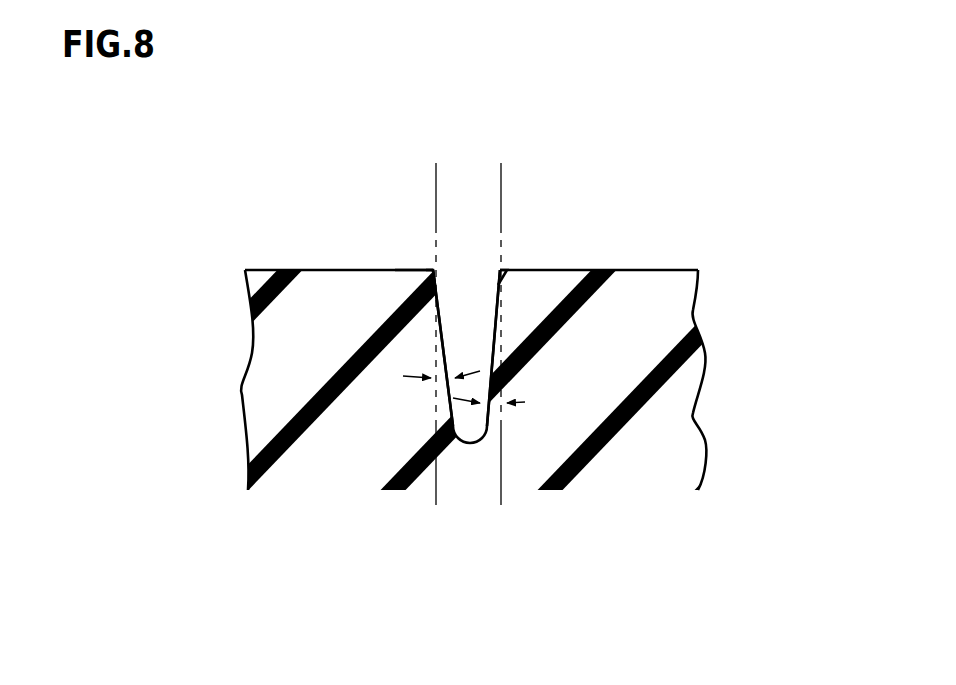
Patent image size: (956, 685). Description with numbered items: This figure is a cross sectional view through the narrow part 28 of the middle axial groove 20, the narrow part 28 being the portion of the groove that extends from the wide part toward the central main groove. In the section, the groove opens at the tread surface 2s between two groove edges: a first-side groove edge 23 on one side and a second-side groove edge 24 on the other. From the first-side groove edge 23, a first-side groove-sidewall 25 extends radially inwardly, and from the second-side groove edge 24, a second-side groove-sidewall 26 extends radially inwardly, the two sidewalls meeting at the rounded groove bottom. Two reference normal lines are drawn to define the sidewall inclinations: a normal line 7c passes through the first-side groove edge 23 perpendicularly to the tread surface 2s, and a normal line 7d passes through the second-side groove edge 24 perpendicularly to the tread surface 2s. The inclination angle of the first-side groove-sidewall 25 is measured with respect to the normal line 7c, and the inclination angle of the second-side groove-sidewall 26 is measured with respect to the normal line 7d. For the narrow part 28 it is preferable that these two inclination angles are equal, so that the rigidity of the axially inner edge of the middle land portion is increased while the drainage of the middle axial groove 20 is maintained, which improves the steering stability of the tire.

The tread surface 2s is at (358, 270).
The middle axial groove 20 is at (467, 345).
The second-side groove-sidewall 26 is at (440, 346).
The first-side groove-sidewall 25 is at (475, 369).
The normal line 7d is at (435, 182).
The normal line 7c is at (501, 180).
The narrow part 28 is at (428, 268).
The second-side groove edge 24 is at (404, 253).
The first-side groove edge 23 is at (503, 268).